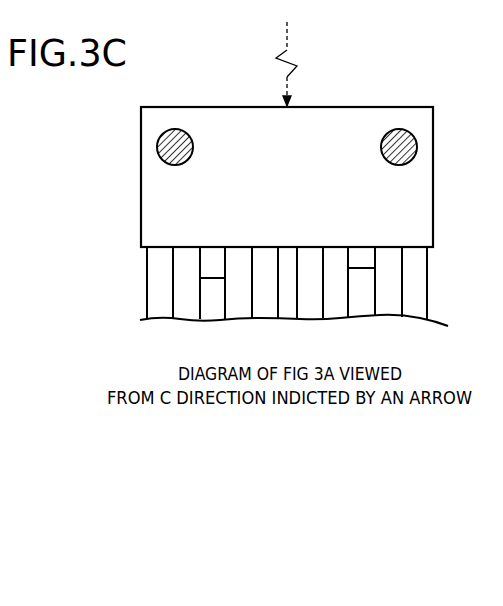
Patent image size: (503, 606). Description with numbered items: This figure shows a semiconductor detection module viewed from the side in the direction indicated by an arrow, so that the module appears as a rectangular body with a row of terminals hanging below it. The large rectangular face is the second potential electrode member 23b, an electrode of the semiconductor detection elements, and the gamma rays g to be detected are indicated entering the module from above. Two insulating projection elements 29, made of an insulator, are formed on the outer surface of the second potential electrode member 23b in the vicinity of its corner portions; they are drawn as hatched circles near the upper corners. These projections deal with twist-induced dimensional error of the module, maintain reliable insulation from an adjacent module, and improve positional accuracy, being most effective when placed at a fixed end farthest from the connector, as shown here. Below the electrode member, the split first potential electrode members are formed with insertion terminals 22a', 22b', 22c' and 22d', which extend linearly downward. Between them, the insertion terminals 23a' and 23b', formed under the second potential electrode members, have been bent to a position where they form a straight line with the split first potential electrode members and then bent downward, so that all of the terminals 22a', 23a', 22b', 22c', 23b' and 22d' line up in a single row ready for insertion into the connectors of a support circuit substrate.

The insulating projection element 29 is at (158, 147).
The second potential electrode member 23b is at (315, 177).
The gamma rays g is at (300, 66).
The insertion terminal 22a' is at (131, 283).
The insertion terminal 23a' is at (196, 304).
The insertion terminal 22b' is at (255, 304).
The insertion terminal 22c' is at (317, 304).
The insertion terminal 23b' is at (378, 304).
The insertion terminal 22d' is at (448, 283).